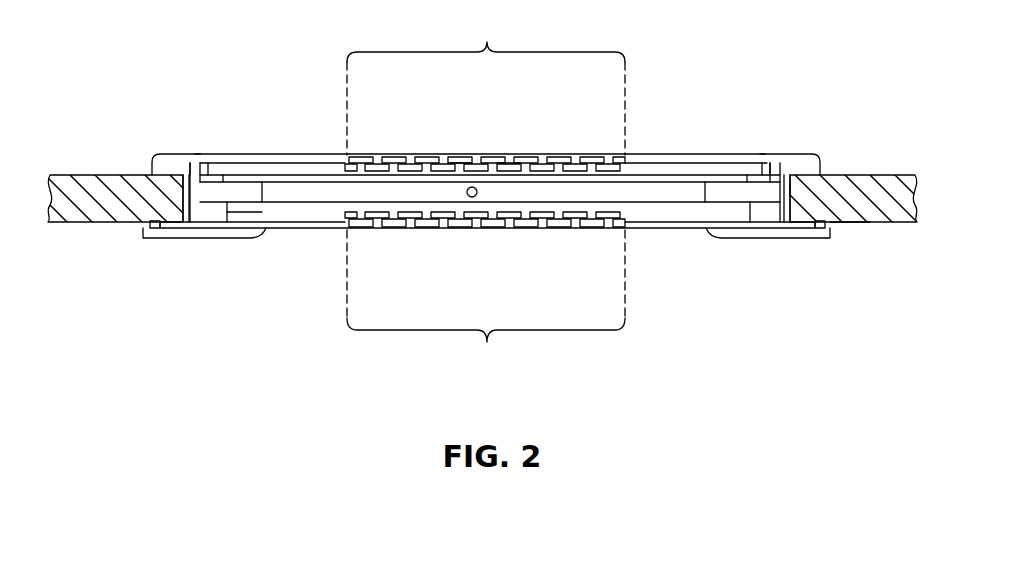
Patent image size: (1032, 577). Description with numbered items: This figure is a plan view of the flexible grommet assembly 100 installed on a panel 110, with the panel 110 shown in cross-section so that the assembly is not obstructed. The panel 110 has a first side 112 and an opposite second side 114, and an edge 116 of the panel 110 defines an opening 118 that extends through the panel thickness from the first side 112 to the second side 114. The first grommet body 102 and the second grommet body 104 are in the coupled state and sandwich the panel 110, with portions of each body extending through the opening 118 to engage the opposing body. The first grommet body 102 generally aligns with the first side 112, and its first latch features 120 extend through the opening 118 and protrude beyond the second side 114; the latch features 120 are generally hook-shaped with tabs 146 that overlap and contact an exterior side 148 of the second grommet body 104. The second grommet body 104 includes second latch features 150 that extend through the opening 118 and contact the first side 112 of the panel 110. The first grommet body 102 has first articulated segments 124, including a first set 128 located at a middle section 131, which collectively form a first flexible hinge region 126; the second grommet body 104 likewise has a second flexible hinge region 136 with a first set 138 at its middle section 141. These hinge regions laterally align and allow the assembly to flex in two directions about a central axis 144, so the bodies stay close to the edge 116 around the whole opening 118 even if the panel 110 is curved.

The flexible grommet assembly 100 is at (209, 97).
The first grommet body 102 is at (290, 154).
The second grommet body 104 is at (290, 230).
The panel 110 is at (92, 188).
The first side 112 is at (884, 175).
The second side 114 is at (870, 224).
The edge 116 is at (205, 183).
The opening 118 is at (798, 183).
The first latch features 120 is at (213, 240).
The first articulated segments 124 is at (408, 156).
The first flexible hinge region 126 is at (453, 150).
The first set of the first articulated segments 128 is at (504, 148).
The middle section 131 is at (486, 80).
The second flexible hinge region 136 is at (468, 238).
The first set of the second articulated segments 138 is at (572, 238).
The middle section 141 is at (486, 302).
The central axis 144 is at (478, 193).
The tabs 146 is at (175, 240).
The exterior side 148 is at (267, 230).
The second latch features 150 is at (172, 162).